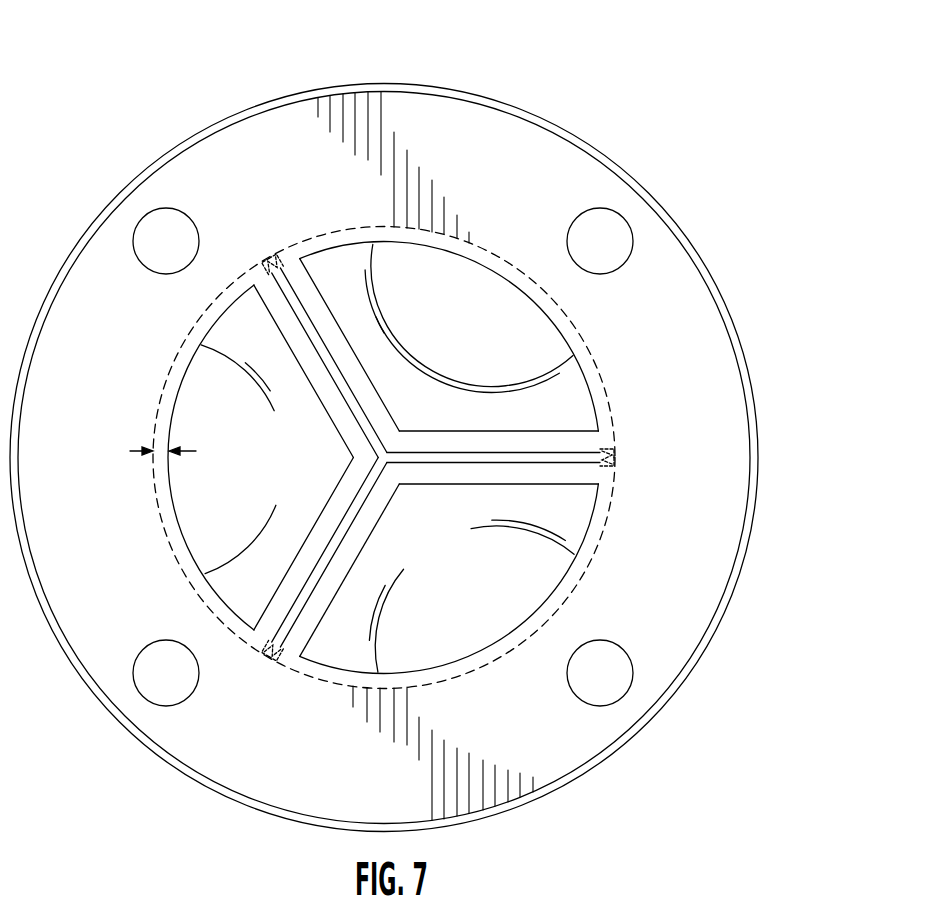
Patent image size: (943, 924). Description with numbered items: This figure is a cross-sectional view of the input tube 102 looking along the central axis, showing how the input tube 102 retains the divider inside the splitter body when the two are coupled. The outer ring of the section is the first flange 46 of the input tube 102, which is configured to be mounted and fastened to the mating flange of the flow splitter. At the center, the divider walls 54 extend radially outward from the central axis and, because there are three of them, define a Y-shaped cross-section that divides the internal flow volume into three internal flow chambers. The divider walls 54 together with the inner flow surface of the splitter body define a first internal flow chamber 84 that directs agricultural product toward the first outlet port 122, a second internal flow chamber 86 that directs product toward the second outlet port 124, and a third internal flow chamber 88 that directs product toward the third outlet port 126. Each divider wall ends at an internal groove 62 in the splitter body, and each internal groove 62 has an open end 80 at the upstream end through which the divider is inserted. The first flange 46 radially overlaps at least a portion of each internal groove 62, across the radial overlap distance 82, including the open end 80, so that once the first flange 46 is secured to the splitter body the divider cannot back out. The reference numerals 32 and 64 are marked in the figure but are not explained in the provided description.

The input tube 102 is at (93, 170).
The first flange 46 is at (437, 84).
The hub spider 32 is at (426, 457).
The divider walls 54 is at (316, 550).
The internal groove 62 is at (610, 452).
The second groove 64 is at (610, 463).
The open end 80 is at (626, 456).
The radial overlap distance 82 is at (134, 450).
The first internal flow chamber 84 is at (232, 487).
The second internal flow chamber 86 is at (500, 362).
The third internal flow chamber 88 is at (450, 626).
The first outlet port 122 is at (235, 427).
The second outlet port 124 is at (477, 317).
The third outlet port 126 is at (498, 588).